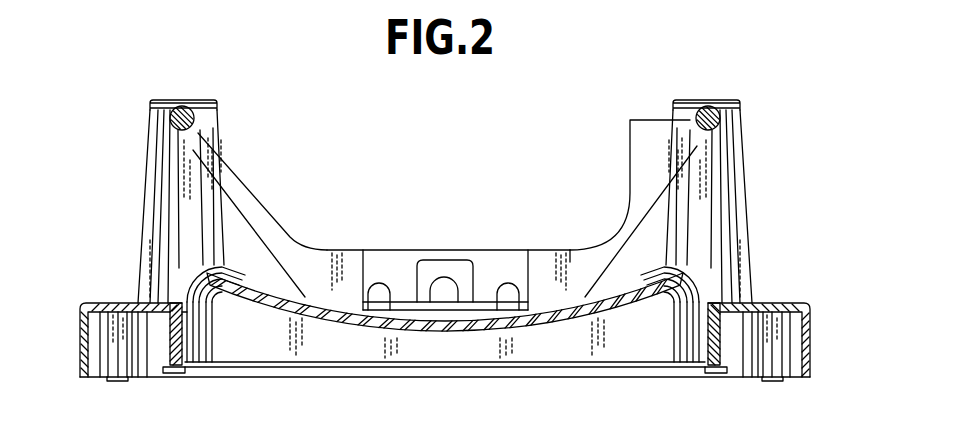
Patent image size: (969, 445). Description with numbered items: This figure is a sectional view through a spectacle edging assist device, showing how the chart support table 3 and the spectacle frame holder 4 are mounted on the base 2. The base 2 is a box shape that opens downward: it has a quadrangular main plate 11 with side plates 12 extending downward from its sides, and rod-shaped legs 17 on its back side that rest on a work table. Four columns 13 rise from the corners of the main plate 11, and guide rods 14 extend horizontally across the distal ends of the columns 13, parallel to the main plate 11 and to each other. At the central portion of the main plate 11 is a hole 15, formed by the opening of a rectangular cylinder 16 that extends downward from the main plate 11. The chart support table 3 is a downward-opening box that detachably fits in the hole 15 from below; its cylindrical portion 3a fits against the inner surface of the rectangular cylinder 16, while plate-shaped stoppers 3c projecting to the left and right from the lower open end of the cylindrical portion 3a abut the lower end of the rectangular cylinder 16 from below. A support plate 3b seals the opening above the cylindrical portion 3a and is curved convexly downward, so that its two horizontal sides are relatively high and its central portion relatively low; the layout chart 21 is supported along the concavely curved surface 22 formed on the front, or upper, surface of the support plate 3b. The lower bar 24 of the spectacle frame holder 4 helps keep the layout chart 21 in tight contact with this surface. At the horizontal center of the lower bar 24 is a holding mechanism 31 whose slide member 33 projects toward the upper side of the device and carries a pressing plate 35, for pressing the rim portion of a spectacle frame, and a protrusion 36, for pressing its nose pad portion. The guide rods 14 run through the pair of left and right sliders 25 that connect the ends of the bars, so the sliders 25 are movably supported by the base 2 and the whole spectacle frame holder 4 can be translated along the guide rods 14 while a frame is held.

The base 2 is at (80, 325).
The chart support table 3 is at (185, 275).
The cylindrical portion 3a is at (183, 320).
The support plate 3b is at (421, 335).
The stoppers 3c is at (173, 374).
The spectacle frame holder 4 is at (267, 195).
The main plate 11 is at (115, 300).
The side plates 12 is at (82, 340).
The columns 13 is at (148, 172).
The guide rods 14 is at (168, 140).
The hole 15 is at (182, 338).
The rectangular cylinder 16 is at (167, 333).
The legs 17 is at (92, 362).
The layout chart 21 is at (343, 305).
The concavely curved surface 22 is at (575, 292).
The lower bar 24 is at (325, 255).
The sliders 25 is at (194, 137).
The holding mechanism 31 is at (403, 250).
The slide member 33 is at (538, 258).
The pressing plate 35 is at (468, 303).
The protrusion 36 is at (446, 287).